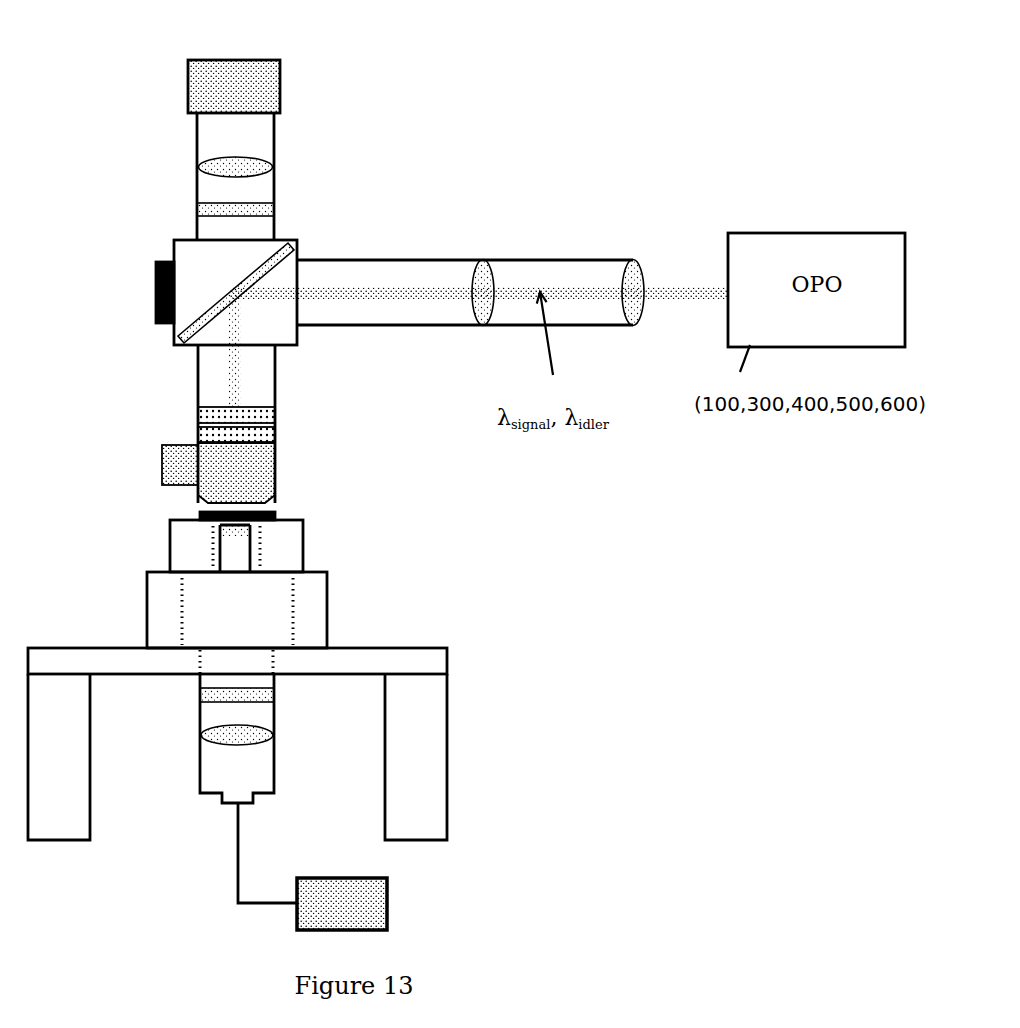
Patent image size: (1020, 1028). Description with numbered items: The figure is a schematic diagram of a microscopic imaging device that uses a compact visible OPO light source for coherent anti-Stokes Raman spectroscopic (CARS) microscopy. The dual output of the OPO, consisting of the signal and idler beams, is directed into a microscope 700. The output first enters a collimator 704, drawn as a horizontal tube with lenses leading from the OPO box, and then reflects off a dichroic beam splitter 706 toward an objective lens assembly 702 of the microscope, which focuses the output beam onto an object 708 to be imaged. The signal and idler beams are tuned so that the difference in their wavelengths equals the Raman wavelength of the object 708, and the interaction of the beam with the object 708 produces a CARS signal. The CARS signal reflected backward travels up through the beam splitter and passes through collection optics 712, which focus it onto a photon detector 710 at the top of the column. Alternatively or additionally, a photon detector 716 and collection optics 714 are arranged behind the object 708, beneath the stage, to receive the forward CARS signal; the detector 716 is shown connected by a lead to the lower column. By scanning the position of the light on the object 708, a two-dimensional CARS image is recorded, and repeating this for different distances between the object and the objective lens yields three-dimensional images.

The microscope 700 is at (481, 138).
The objective lens assembly 702 is at (195, 458).
The collimator 704 is at (545, 239).
The dichroic beam splitter 706 is at (193, 286).
The object 708 is at (290, 514).
The photon detector 710 is at (292, 44).
The collection optics 712 is at (180, 183).
The collection optics 714 is at (186, 698).
The photon detector 716 is at (398, 929).